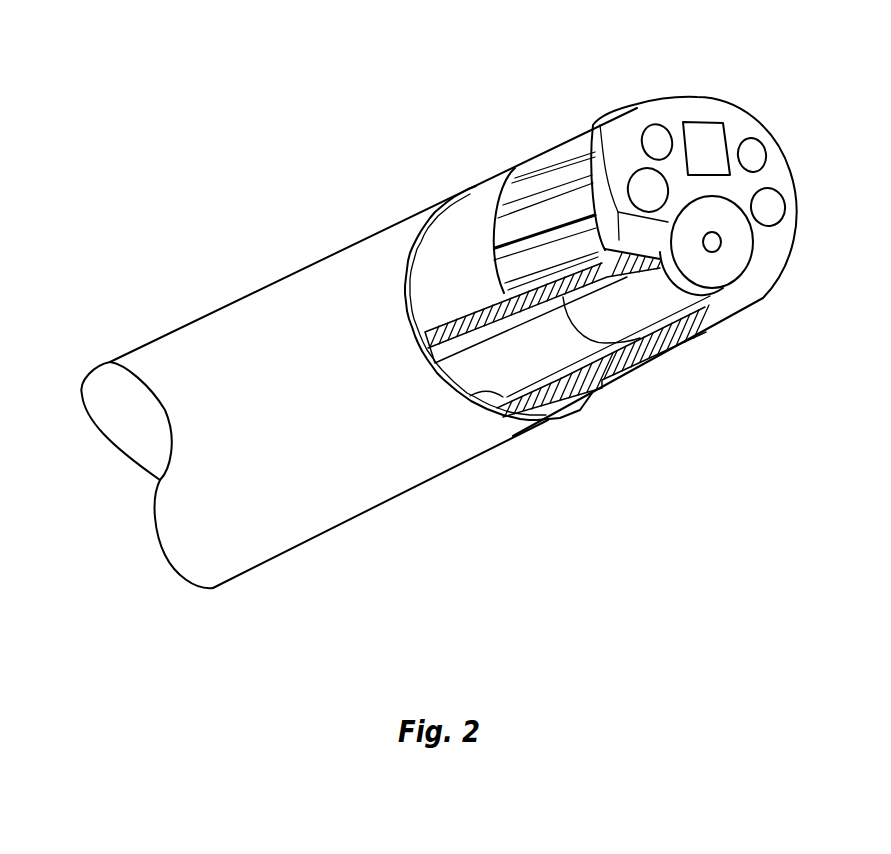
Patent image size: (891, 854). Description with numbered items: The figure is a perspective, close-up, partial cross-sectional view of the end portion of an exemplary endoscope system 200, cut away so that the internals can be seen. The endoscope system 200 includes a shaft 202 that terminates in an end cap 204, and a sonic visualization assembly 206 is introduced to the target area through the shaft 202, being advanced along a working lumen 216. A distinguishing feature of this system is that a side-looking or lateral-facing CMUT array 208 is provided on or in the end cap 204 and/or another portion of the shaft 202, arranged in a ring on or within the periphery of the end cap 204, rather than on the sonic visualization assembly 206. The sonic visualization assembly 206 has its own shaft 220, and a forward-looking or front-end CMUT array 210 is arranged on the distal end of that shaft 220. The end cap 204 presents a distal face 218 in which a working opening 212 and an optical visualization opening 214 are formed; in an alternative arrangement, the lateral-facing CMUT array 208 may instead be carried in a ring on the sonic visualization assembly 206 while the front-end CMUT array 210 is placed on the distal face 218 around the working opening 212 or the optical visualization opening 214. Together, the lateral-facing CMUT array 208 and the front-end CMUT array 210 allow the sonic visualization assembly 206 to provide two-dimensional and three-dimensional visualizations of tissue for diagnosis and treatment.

The endoscope system 200 is at (299, 128).
The shaft 202 is at (382, 503).
The end cap 204 is at (683, 95).
The sonic visualization assembly 206 is at (739, 288).
The lateral-facing CMUT array 208 is at (562, 142).
The front-end CMUT array 210 is at (756, 250).
The working opening 212 is at (738, 289).
The optical visualization opening 214 is at (703, 121).
The working lumen 216 is at (470, 397).
The distal face 218 is at (738, 125).
The shaft 220 is at (575, 328).